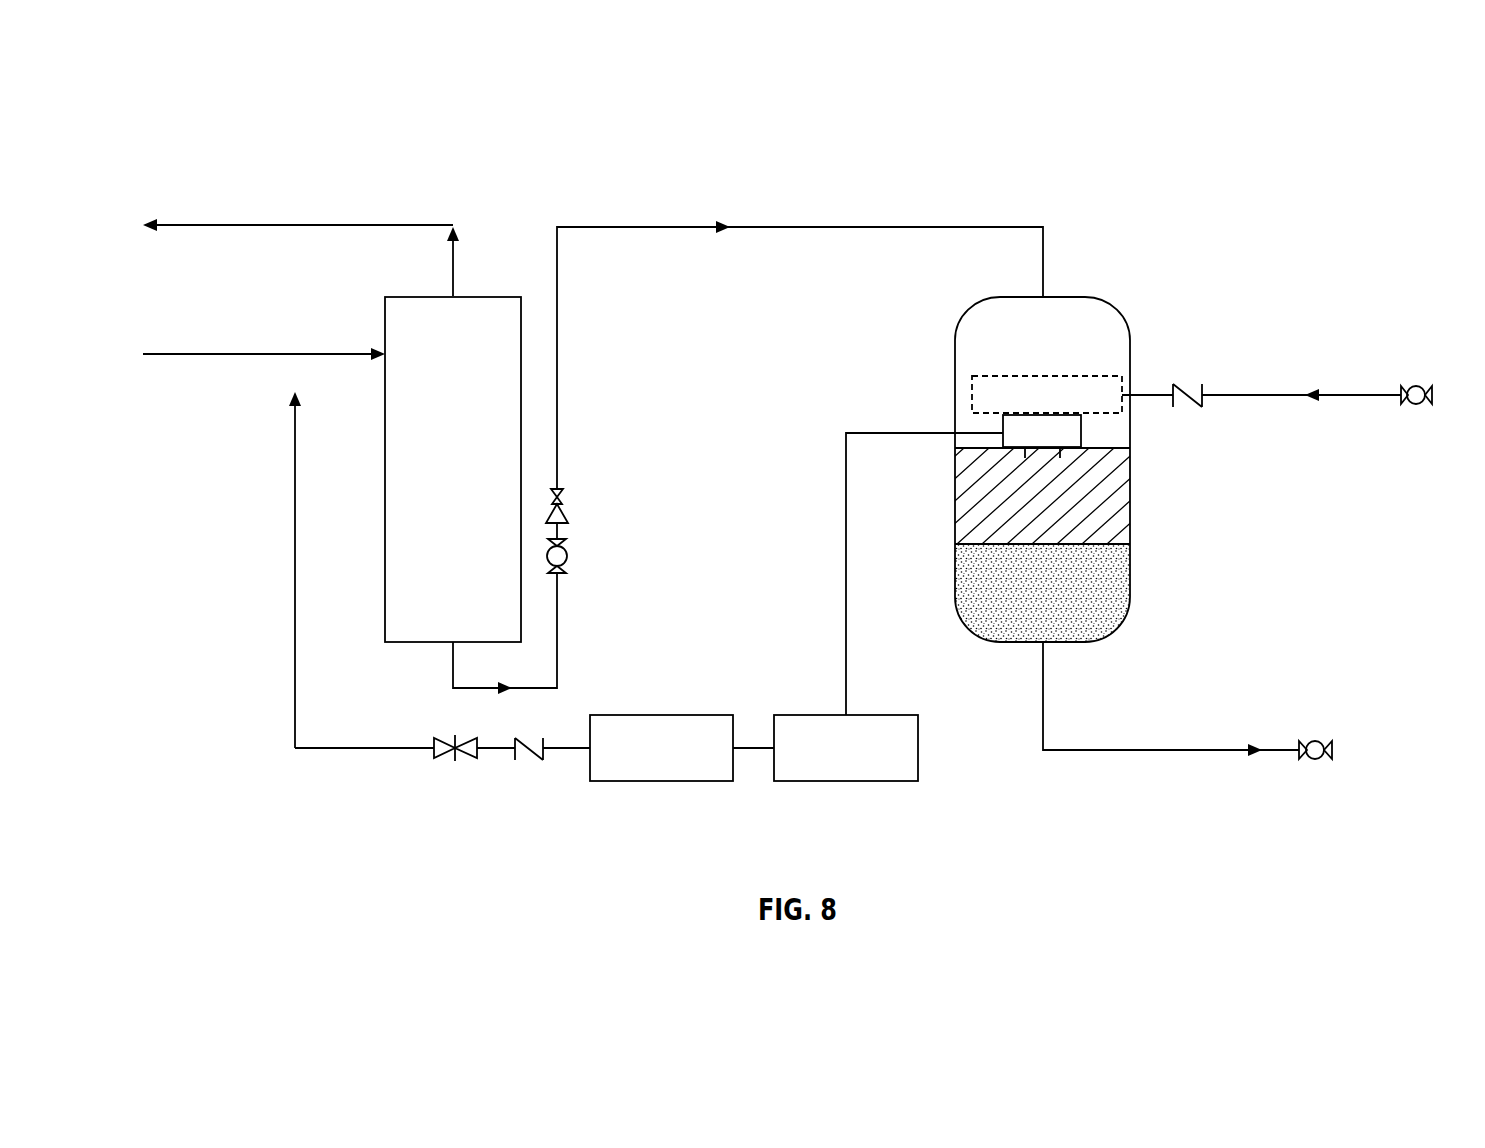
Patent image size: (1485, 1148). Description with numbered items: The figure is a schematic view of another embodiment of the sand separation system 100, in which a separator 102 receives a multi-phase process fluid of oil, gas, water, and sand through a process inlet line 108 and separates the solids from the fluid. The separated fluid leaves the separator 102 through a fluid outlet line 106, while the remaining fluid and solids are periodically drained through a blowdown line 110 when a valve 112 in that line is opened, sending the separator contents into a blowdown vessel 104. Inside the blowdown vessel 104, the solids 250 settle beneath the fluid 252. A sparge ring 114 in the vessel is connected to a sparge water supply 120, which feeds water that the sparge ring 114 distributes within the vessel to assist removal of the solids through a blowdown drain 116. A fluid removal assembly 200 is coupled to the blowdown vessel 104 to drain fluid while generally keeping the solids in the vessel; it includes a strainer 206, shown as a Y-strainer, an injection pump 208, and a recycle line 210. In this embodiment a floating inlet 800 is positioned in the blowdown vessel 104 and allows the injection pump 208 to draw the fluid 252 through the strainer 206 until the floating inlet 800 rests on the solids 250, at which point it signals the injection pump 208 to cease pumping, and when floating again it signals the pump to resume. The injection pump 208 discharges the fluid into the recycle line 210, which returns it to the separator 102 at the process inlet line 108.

The sand separation system 100 is at (200, 109).
The separator 102 is at (478, 296).
The blowdown vessel 104 is at (1085, 300).
The fluid outlet line 106 is at (370, 224).
The process inlet line 108 is at (217, 358).
The blowdown line 110 is at (645, 224).
The valve 112 is at (567, 556).
The sparge ring 114 is at (1100, 377).
The blowdown drain 116 is at (1115, 748).
The sparge water supply 120 is at (1418, 405).
The fluid removal assembly 200 is at (805, 832).
The strainer 206 is at (855, 782).
The injection pump 208 is at (660, 782).
The recycle line 210 is at (370, 750).
The solids 250 is at (1130, 595).
The fluid 252 is at (1113, 527).
The floating inlet 800 is at (1081, 420).